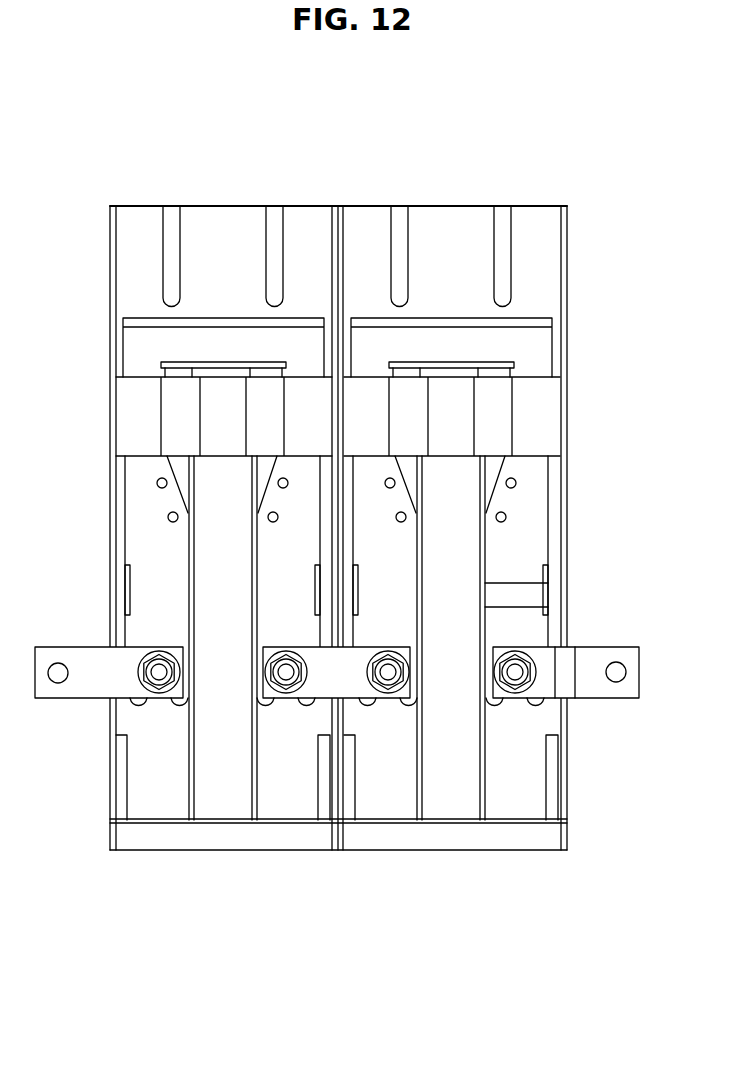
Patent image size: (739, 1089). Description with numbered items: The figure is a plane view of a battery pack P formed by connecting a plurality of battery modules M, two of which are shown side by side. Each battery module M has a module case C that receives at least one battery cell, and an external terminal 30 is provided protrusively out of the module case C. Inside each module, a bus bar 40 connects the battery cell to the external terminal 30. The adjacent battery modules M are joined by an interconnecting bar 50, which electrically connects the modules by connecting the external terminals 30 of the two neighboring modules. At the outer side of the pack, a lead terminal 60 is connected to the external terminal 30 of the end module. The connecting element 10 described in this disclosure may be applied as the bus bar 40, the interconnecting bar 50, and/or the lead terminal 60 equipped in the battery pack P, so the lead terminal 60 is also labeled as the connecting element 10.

The battery pack P is at (485, 120).
The battery module M is at (231, 177).
The module case C is at (567, 283).
The bus bar 40 is at (484, 551).
The interconnecting bar 50 is at (313, 685).
The external terminal 30 is at (515, 675).
The lead terminal 60 is at (613, 703).
The connecting element 10 is at (568, 777).